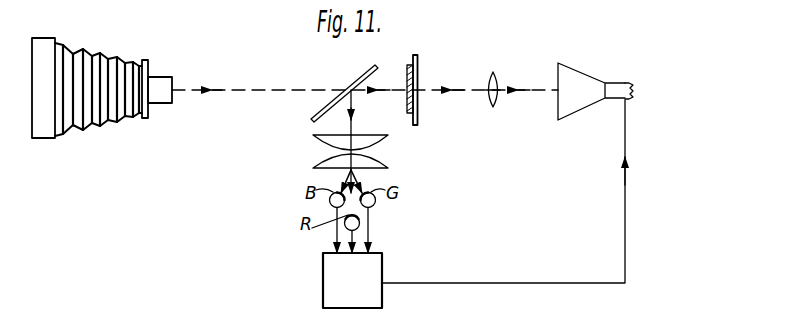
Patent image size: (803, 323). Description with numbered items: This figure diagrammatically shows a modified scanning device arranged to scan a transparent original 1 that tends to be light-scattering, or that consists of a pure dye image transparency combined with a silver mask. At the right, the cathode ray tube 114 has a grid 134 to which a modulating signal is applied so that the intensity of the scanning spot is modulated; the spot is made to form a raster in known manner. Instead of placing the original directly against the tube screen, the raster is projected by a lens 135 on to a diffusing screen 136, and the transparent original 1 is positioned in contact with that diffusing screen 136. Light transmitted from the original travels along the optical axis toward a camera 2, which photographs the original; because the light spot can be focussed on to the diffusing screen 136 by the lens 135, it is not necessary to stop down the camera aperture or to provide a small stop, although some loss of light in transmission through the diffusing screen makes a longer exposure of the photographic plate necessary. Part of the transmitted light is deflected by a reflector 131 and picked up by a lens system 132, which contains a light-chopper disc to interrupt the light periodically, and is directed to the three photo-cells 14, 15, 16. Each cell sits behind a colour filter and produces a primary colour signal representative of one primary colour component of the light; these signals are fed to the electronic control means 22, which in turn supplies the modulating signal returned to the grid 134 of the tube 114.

The camera 2 is at (125, 60).
The reflector 131 is at (350, 81).
The transparent original 1 is at (407, 73).
The diffusing screen 136 is at (418, 70).
The lens 135 is at (495, 72).
The cathode ray tube 114 is at (569, 73).
The grid 134 is at (622, 84).
The lens system 132 is at (325, 152).
The photo-cell 14 is at (329, 202).
The photo-cell 15 is at (371, 203).
The photo-cell 16 is at (360, 223).
The electronic control means 22 is at (367, 283).